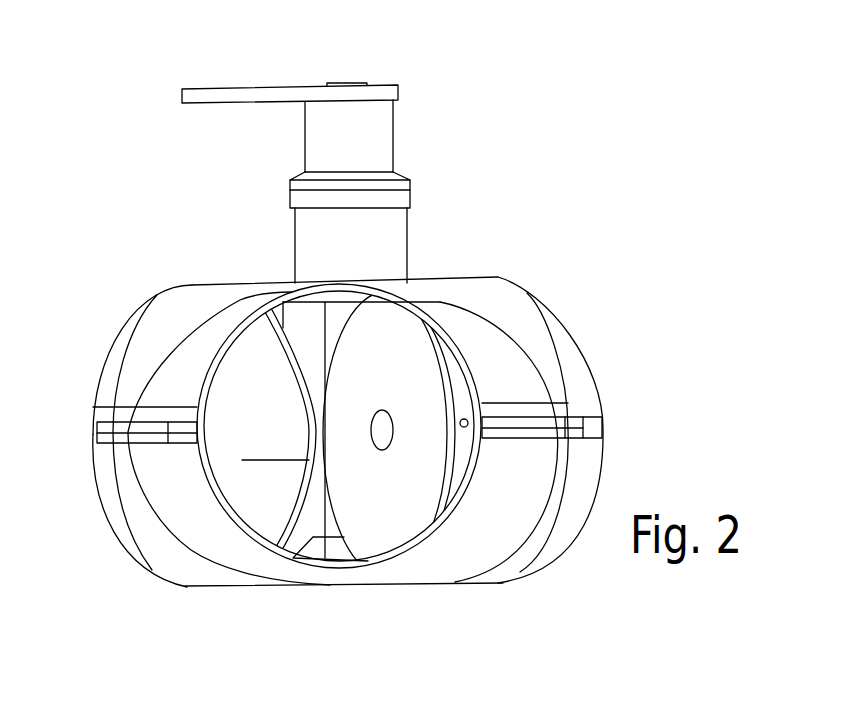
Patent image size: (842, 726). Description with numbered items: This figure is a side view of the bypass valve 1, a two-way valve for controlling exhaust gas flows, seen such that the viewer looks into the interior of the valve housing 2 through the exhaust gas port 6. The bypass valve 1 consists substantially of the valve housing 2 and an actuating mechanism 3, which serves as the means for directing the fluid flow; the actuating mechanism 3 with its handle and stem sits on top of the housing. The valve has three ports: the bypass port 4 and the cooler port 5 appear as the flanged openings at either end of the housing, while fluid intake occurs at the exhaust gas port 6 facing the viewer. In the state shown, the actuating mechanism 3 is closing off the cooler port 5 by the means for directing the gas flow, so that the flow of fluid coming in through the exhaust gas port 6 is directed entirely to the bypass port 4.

The bypass valve 1 is at (355, 329).
The valve housing 2 is at (462, 280).
The actuating mechanism 3 is at (395, 137).
The bypass port 4 is at (101, 357).
The cooler port 5 is at (590, 353).
The exhaust gas port 6 is at (230, 335).